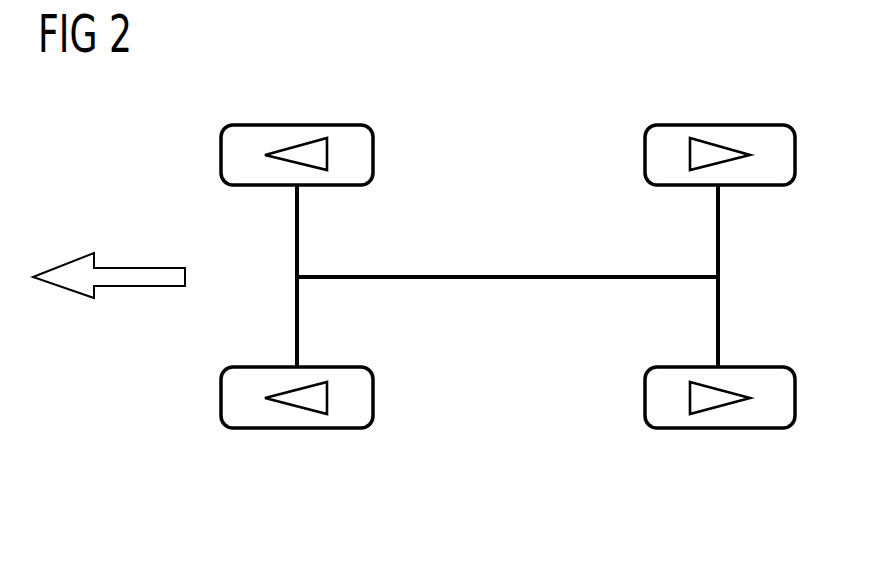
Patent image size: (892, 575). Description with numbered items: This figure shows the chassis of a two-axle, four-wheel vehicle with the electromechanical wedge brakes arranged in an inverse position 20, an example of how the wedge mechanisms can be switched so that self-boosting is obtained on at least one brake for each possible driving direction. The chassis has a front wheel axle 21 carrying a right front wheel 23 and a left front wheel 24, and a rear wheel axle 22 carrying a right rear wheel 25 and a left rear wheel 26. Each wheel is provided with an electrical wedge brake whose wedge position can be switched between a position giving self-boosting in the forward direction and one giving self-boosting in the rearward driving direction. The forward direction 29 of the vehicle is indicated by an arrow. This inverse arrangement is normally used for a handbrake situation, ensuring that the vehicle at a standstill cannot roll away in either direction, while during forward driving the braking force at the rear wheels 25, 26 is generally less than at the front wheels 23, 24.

The inverse position 20 is at (583, 43).
The front wheel axle 21 is at (299, 222).
The rear wheel axle 22 is at (720, 222).
The right front wheel 23 is at (348, 124).
The left front wheel 24 is at (355, 366).
The right rear wheel 25 is at (768, 124).
The left rear wheel 26 is at (772, 366).
The forward direction 29 is at (139, 267).